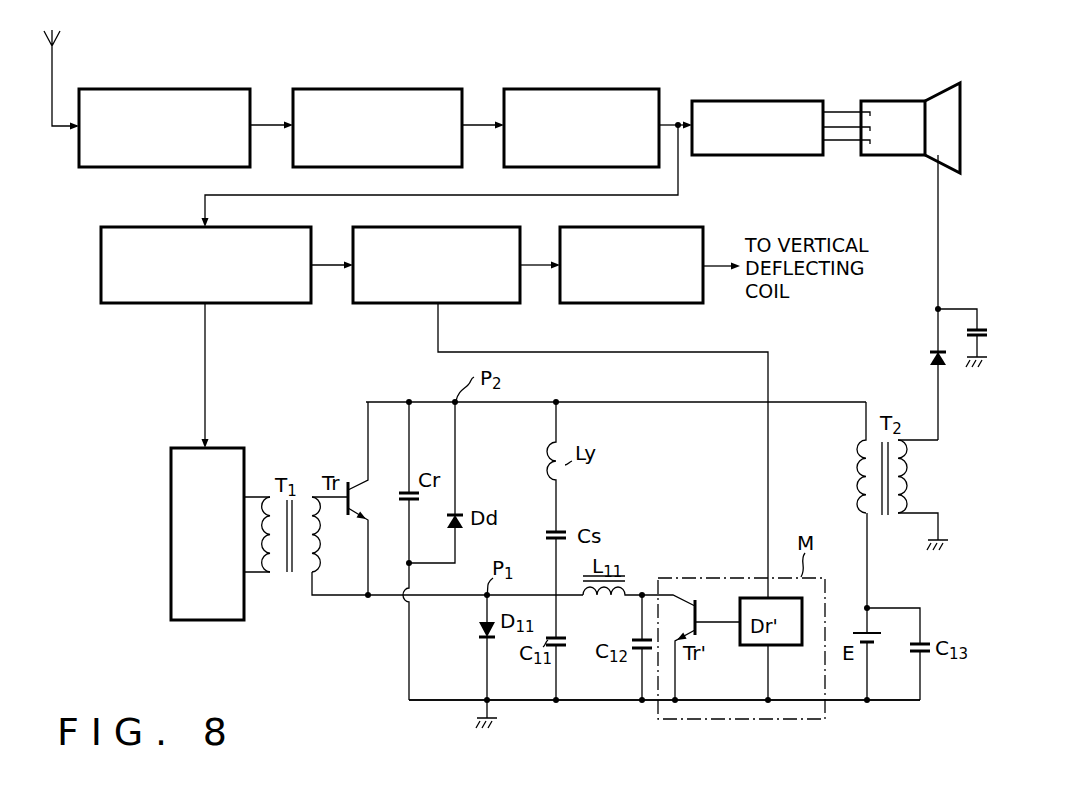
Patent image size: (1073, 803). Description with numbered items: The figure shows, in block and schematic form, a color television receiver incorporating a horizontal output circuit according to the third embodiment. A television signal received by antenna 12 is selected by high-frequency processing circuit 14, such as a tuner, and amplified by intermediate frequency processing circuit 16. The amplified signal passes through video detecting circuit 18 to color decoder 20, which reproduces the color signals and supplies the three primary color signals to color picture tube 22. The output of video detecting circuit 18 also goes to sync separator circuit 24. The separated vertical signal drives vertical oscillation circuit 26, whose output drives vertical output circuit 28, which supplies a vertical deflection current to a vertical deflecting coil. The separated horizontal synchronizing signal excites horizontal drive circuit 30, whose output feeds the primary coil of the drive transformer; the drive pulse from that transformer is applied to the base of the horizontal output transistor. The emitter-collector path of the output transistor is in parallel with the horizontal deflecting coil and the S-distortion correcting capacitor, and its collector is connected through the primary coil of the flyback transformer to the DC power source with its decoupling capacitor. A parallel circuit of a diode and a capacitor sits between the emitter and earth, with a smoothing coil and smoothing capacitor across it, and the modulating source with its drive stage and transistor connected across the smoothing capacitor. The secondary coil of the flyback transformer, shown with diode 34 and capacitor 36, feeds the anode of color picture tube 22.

The antenna 12 is at (58, 36).
The high-frequency (RF) processing circuit 14 is at (168, 89).
The intermediate frequency (IF) processing circuit 16 is at (368, 89).
The video detecting circuit 18 is at (573, 89).
The color decoder 20 is at (755, 101).
The color picture tube 22 is at (890, 101).
The sync separator circuit 24 is at (101, 262).
The vertical oscillation circuit 26 is at (395, 303).
The vertical output circuit 28 is at (633, 303).
The horizontal drive circuit 30 is at (171, 530).
The rectifier diode 34 is at (929, 360).
The smoothing capacitor 36 is at (990, 331).